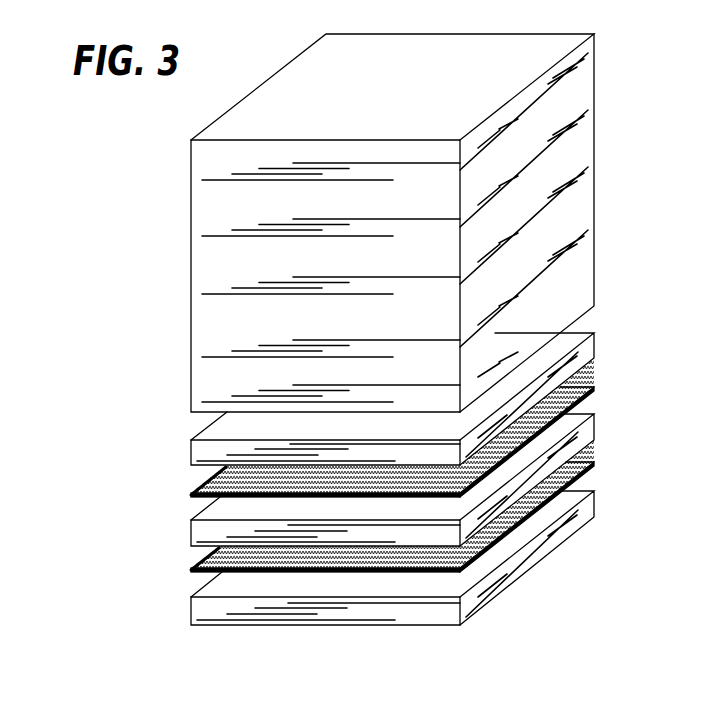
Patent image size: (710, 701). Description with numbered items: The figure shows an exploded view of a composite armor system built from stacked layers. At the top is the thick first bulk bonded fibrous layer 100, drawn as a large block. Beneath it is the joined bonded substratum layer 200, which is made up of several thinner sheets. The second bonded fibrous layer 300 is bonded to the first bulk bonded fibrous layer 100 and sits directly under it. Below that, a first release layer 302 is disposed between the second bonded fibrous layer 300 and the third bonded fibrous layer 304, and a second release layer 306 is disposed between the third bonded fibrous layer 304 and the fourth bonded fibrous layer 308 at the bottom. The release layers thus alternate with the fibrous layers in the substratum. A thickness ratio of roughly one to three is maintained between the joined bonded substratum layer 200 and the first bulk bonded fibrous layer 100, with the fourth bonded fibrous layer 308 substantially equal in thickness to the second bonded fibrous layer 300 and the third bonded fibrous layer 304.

The first bulk bonded fibrous layer 100 is at (163, 143).
The joined bonded substratum layer 200 is at (163, 438).
The second bonded fibrous layer 300 is at (594, 333).
The first release layer 302 is at (594, 387).
The third bonded fibrous layer 304 is at (594, 414).
The second release layer 306 is at (594, 462).
The fourth bonded fibrous layer 308 is at (594, 491).